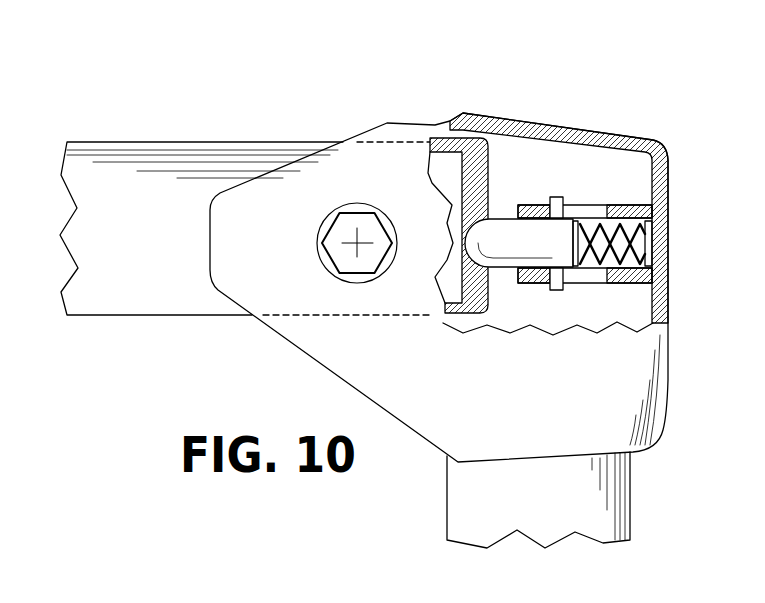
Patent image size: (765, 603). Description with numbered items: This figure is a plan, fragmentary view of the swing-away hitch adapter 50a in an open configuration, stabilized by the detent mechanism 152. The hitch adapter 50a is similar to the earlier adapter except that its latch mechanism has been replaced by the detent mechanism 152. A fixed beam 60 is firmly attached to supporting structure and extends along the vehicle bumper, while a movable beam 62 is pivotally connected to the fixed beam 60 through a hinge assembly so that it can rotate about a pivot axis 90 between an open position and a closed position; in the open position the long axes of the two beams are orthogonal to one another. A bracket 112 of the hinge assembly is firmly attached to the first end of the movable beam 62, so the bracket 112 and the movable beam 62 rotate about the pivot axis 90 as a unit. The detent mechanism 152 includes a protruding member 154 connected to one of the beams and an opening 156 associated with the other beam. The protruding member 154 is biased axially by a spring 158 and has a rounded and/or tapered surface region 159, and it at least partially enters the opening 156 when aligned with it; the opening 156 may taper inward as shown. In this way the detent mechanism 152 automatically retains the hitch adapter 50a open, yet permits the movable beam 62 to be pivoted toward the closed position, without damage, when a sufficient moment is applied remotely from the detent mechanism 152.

The hitch adapter 50a is at (176, 110).
The fixed beam 60 is at (97, 141).
The movable beam 62 is at (632, 497).
The pivot axis 90 is at (357, 247).
The bracket 112 is at (668, 377).
The detent mechanism 152 is at (521, 176).
The protruding member 154 is at (506, 271).
The opening 156 is at (488, 238).
The spring 158 is at (602, 218).
The rounded and/or tapered surface region 159 is at (450, 243).